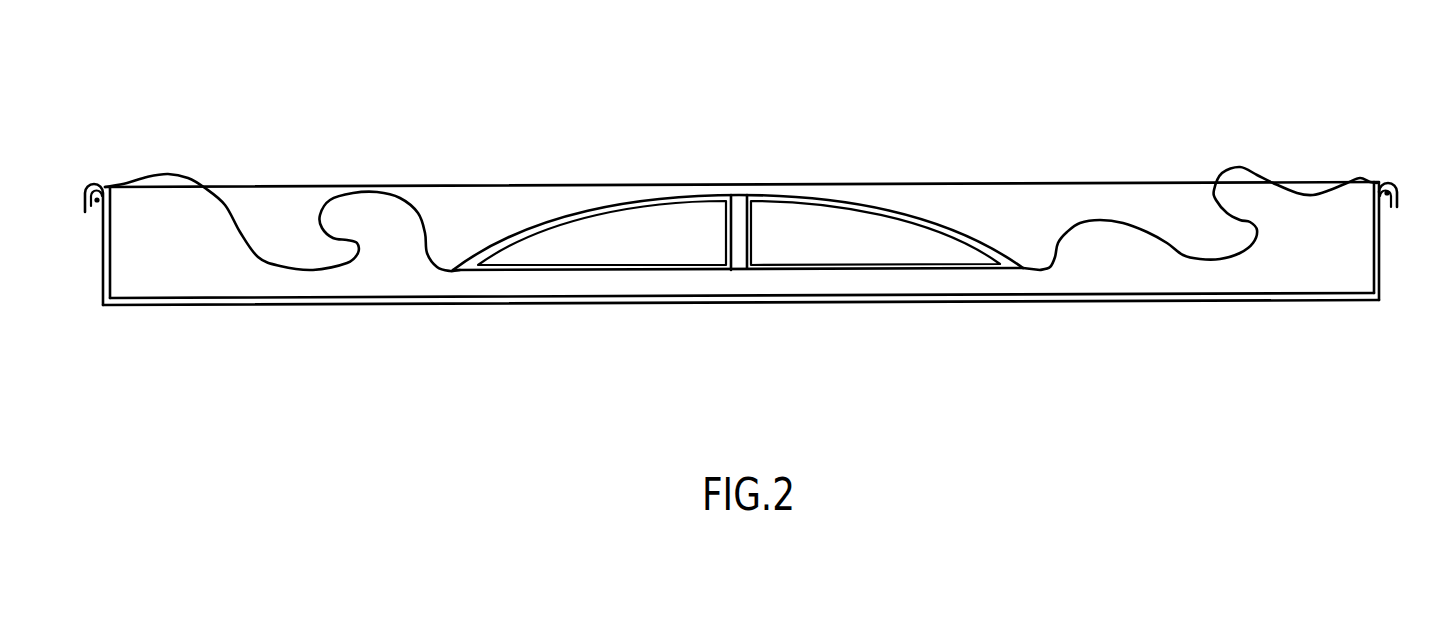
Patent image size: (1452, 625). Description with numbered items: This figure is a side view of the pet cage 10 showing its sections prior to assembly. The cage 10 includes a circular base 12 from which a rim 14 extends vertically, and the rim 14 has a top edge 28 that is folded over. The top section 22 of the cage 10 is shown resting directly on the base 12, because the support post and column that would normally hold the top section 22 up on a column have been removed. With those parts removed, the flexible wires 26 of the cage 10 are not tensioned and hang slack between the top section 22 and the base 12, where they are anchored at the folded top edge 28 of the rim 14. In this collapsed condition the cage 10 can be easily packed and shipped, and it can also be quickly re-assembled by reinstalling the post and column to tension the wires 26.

The pet cage 10 is at (183, 113).
The circular base 12 is at (173, 297).
The rim 14 is at (1383, 244).
The top section 22 is at (862, 207).
The flexible wires 26 is at (1242, 165).
The top edge 28 is at (1384, 185).